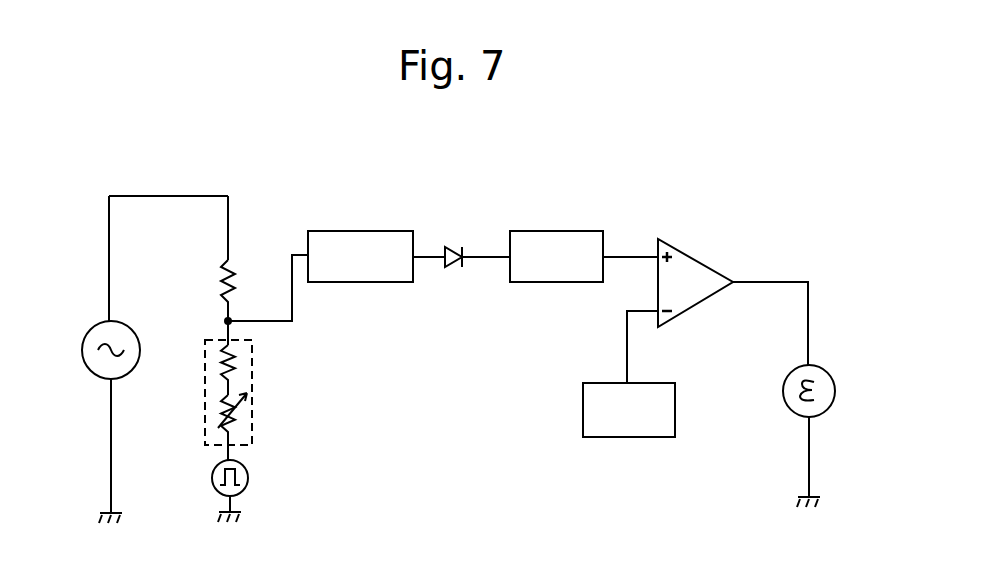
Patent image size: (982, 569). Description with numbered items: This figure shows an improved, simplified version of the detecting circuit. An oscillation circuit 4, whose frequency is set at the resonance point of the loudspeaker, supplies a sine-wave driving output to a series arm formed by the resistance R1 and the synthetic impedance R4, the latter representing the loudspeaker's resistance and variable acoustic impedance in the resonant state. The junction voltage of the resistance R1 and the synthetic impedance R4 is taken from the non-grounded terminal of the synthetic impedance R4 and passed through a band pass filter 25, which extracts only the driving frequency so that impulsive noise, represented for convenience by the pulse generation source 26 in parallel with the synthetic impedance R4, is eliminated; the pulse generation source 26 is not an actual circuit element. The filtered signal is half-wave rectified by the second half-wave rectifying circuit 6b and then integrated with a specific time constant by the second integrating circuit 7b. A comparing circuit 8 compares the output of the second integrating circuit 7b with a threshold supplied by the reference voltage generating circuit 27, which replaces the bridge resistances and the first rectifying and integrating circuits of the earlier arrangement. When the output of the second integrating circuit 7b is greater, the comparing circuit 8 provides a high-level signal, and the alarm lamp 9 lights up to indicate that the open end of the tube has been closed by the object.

The oscillation circuit 4 is at (96, 326).
The resistance R1 is at (218, 265).
The synthetic impedance R4 is at (240, 368).
The pulse generation source 26 is at (249, 477).
The band pass filter 25 is at (360, 231).
The second half-wave rectifying circuit 6b is at (455, 246).
The second integrating circuit 7b is at (543, 231).
The comparing circuit 8 is at (690, 256).
The reference voltage generating circuit 27 is at (622, 437).
The alarm lamp 9 is at (826, 371).